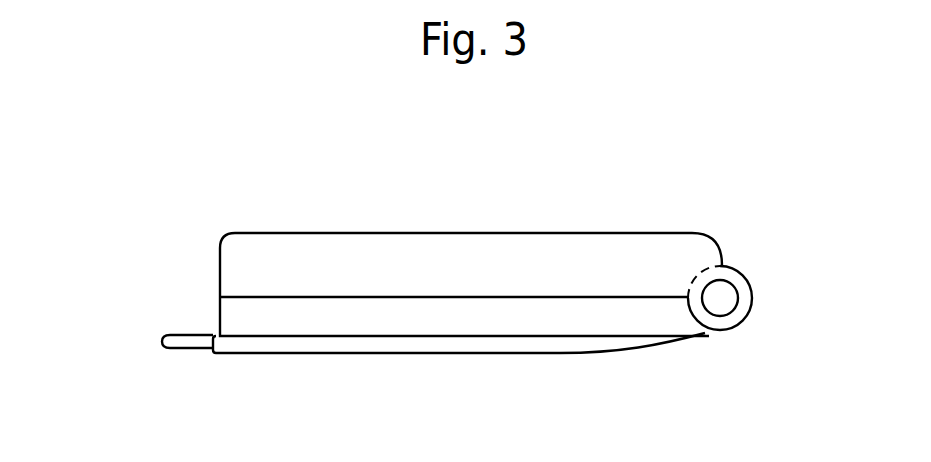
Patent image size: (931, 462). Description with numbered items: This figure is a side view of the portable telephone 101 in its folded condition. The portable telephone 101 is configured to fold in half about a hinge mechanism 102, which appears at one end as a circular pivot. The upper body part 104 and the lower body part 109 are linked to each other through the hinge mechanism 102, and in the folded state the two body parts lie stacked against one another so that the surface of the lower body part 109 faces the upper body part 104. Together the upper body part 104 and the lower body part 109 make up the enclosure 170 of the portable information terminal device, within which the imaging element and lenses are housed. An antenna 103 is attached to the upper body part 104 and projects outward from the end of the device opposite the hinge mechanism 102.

The enclosure 170 is at (135, 218).
The lower body part 109 is at (220, 258).
The upper body part 104 is at (220, 310).
The hinge mechanism 102 is at (723, 297).
The portable telephone 101 is at (498, 373).
The antenna 103 is at (187, 350).